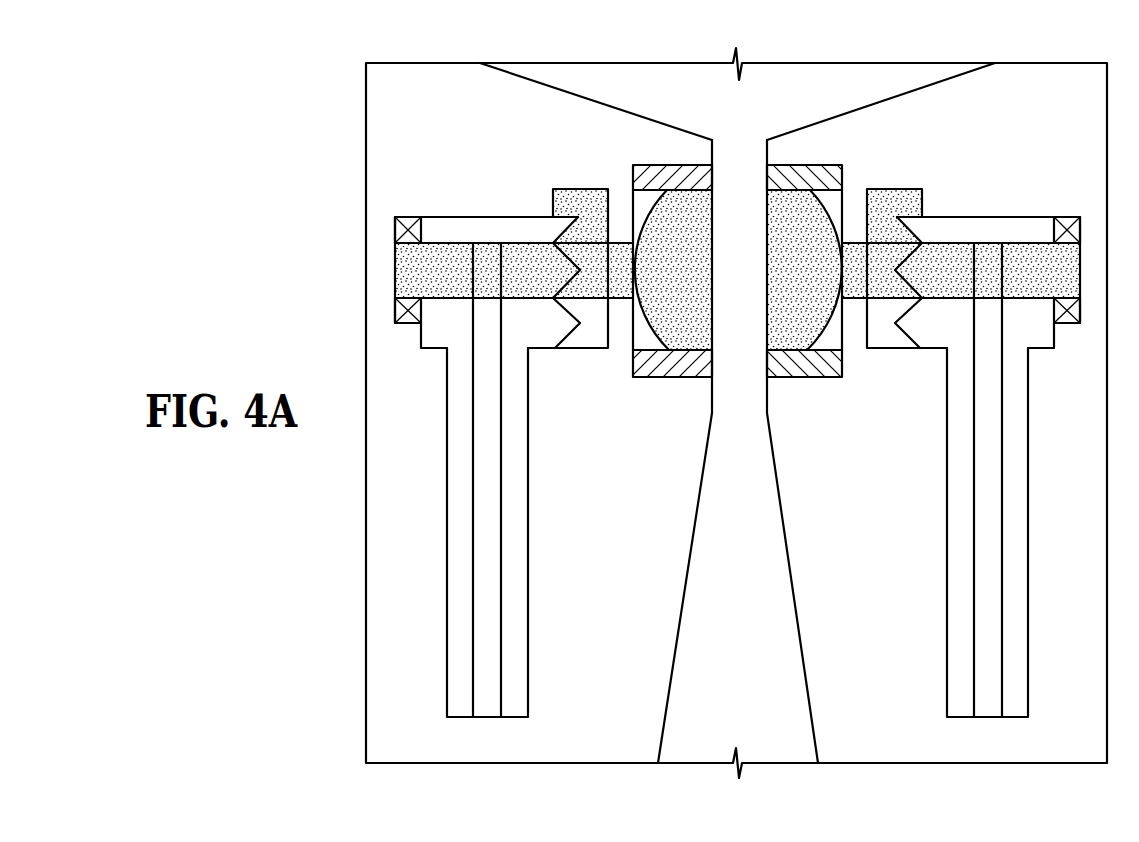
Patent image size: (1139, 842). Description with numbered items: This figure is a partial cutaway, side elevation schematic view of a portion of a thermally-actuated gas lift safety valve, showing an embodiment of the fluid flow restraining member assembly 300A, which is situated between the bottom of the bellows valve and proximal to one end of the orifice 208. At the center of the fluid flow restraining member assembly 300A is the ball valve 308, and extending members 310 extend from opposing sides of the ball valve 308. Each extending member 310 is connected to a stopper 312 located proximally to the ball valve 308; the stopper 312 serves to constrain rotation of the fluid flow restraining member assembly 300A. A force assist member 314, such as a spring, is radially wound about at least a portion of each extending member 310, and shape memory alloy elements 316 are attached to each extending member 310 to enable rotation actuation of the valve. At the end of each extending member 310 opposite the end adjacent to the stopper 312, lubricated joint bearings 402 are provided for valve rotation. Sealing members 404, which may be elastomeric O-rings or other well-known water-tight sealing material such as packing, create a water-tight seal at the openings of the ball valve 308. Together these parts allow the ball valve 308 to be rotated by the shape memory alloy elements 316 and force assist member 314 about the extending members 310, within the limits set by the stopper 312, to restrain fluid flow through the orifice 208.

The fluid flow restraining member assembly 300A is at (971, 167).
The orifice 208 is at (718, 573).
The ball valve 308 is at (793, 323).
The extending member 310 is at (508, 244).
The stopper 312 is at (575, 190).
The force assist member 314 is at (562, 307).
The shape memory alloy element 316 is at (471, 268).
The lubricated joint bearing 402 is at (1065, 218).
The sealing member 404 is at (808, 166).